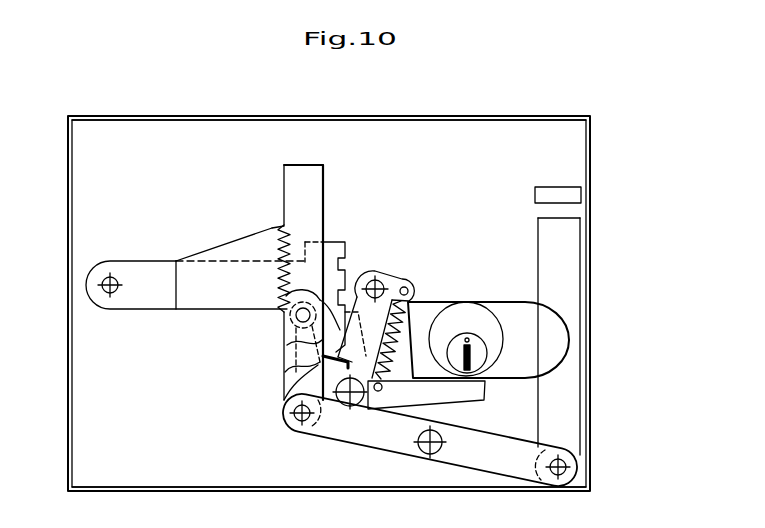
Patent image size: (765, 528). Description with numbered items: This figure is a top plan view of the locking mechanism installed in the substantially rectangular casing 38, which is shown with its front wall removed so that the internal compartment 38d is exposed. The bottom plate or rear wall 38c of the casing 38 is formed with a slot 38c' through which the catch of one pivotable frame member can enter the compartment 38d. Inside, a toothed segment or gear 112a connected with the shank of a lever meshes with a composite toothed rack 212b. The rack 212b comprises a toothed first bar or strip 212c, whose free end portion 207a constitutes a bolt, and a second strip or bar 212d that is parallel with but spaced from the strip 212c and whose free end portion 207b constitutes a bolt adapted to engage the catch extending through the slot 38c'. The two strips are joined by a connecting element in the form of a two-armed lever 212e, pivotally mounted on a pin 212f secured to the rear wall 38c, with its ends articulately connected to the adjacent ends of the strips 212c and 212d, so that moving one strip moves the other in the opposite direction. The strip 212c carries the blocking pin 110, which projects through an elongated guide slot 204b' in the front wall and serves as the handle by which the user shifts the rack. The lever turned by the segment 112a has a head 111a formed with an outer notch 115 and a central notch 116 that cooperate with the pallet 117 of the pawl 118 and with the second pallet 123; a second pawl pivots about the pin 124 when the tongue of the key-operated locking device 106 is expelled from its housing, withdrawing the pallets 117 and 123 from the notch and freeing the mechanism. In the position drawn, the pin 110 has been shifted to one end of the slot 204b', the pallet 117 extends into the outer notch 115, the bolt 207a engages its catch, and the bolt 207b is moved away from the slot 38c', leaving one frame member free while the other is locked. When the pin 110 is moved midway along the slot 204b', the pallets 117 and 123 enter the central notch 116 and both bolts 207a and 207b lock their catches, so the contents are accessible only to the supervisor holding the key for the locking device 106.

The casing 38 is at (60, 344).
The internal compartment 38d is at (436, 126).
The bottom plate or rear wall 38c is at (329, 501).
The slot 38c' is at (563, 178).
The toothed segment or gear 112a is at (199, 304).
The toothed first bar or strip 212c is at (319, 184).
The free end portion or bolt 207a is at (307, 170).
The pallet 123 is at (286, 296).
The elongated guide slot 204b' is at (269, 315).
The blocking pin 110 is at (300, 323).
The central notch 116 is at (300, 349).
The composite toothed rack 212b is at (283, 390).
The outer notch 115 is at (286, 396).
The head 111a is at (338, 264).
The pawl 118 is at (392, 273).
The locking device 106 is at (480, 303).
The pin 124 is at (464, 401).
The pallet 117 is at (354, 406).
The two-armed lever 212e is at (500, 463).
The pin 212f is at (426, 453).
The second strip or bar 212d is at (567, 302).
The free end portion or bolt 207b is at (557, 230).